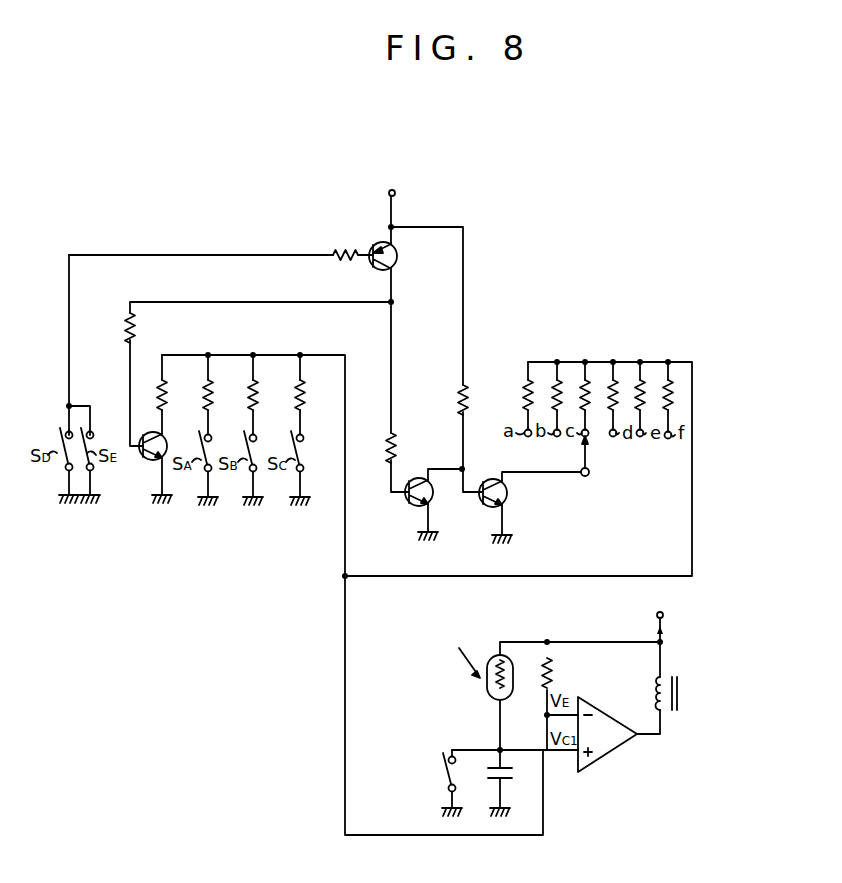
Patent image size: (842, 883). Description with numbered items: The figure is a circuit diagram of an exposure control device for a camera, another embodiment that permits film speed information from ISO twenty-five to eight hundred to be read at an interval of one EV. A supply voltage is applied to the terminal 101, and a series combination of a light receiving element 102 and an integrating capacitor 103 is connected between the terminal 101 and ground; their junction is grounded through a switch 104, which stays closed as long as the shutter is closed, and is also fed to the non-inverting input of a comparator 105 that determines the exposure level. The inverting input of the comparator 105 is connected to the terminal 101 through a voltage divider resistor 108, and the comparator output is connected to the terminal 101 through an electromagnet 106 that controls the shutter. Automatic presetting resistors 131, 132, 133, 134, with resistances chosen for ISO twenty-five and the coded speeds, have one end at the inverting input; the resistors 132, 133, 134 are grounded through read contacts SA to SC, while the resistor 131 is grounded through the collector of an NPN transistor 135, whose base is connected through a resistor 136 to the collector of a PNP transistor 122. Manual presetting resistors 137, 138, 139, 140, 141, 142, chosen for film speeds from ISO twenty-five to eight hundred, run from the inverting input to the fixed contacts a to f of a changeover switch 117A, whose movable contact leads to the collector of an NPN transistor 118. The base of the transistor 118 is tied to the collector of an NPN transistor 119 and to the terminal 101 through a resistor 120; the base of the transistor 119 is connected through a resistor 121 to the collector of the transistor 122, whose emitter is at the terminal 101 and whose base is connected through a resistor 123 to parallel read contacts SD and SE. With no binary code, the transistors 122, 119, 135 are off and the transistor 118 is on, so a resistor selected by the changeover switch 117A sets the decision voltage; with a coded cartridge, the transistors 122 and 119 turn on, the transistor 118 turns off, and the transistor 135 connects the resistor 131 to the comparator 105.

The terminal 101 is at (396, 194).
The light receiving element 102 is at (508, 696).
The integrating capacitor 103 is at (505, 774).
The switch 104 is at (448, 776).
The comparator 105 is at (604, 750).
The electromagnet 106 is at (655, 702).
The voltage divider resistor 108 is at (551, 670).
The changeover switch 117A is at (578, 466).
The NPN transistor 118 is at (485, 505).
The NPN transistor 119 is at (410, 503).
The resistor 120 is at (458, 399).
The resistor 121 is at (393, 448).
The PNP transistor 122 is at (398, 258).
The resistor 123 is at (346, 240).
The automatic presetting resistor 131 is at (164, 386).
The automatic presetting resistor 132 is at (210, 386).
The automatic presetting resistor 133 is at (256, 386).
The automatic presetting resistor 134 is at (302, 385).
The NPN transistor 135 is at (147, 457).
The resistor 136 is at (126, 328).
The manual presetting resistor 137 is at (525, 398).
The manual presetting resistor 138 is at (555, 392).
The manual presetting resistor 139 is at (587, 398).
The manual presetting resistor 140 is at (615, 396).
The manual presetting resistor 141 is at (643, 396).
The manual presetting resistor 142 is at (671, 396).